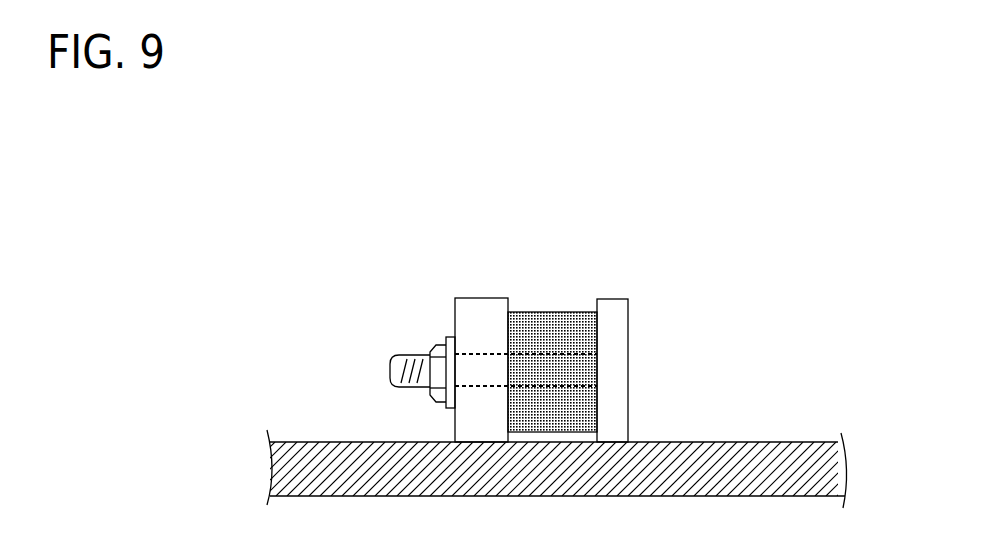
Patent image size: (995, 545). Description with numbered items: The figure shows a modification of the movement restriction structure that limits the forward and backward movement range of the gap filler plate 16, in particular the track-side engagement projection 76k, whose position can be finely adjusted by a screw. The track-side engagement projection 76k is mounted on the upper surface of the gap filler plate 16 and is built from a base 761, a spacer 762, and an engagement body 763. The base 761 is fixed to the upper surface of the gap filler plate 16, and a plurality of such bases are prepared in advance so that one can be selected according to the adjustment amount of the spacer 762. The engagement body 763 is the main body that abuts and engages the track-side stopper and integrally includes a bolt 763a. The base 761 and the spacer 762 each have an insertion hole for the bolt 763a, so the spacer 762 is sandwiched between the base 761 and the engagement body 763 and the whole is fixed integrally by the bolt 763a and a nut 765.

The gap filler plate 16 is at (793, 442).
The track-side engagement projection 76k is at (638, 213).
The base 761 is at (482, 310).
The spacer 762 is at (556, 312).
The engagement body 763 is at (615, 303).
The bolt 763a is at (405, 357).
The nut 765 is at (442, 342).